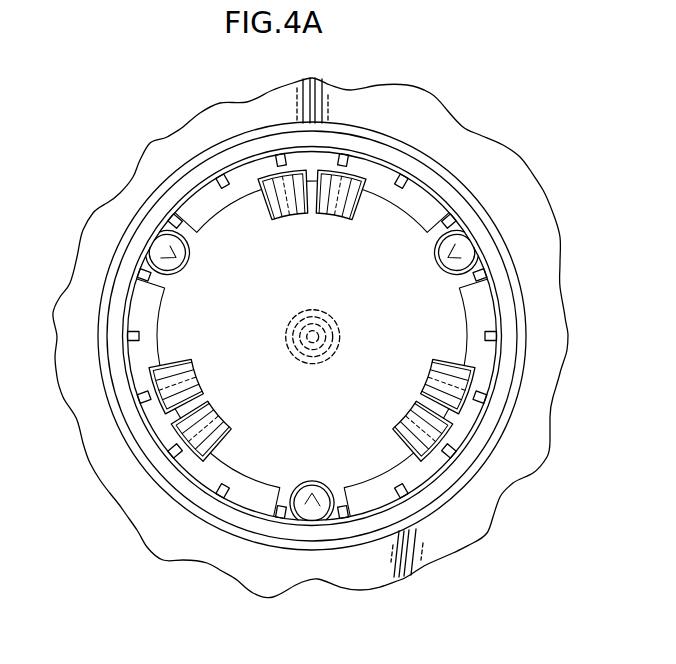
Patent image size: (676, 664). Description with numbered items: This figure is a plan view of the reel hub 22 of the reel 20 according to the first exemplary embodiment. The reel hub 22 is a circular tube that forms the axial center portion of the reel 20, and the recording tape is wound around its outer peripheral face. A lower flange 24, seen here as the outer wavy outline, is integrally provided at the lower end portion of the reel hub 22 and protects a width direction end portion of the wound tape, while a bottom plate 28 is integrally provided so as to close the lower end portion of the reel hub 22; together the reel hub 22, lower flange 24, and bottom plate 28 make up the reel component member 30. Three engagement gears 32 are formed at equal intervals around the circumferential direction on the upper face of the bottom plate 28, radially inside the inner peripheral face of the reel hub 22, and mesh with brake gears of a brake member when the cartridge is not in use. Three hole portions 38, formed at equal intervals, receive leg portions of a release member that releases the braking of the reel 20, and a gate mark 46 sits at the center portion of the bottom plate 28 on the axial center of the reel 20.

The reel 20 is at (316, 327).
The reel component member 30 is at (480, 117).
The reel hub 22 is at (472, 190).
The lower flange 24 is at (551, 343).
The bottom plate 28 is at (188, 337).
The engagement gears 32 is at (292, 219).
The hole portions 38 is at (176, 264).
The gate mark 46 is at (313, 364).